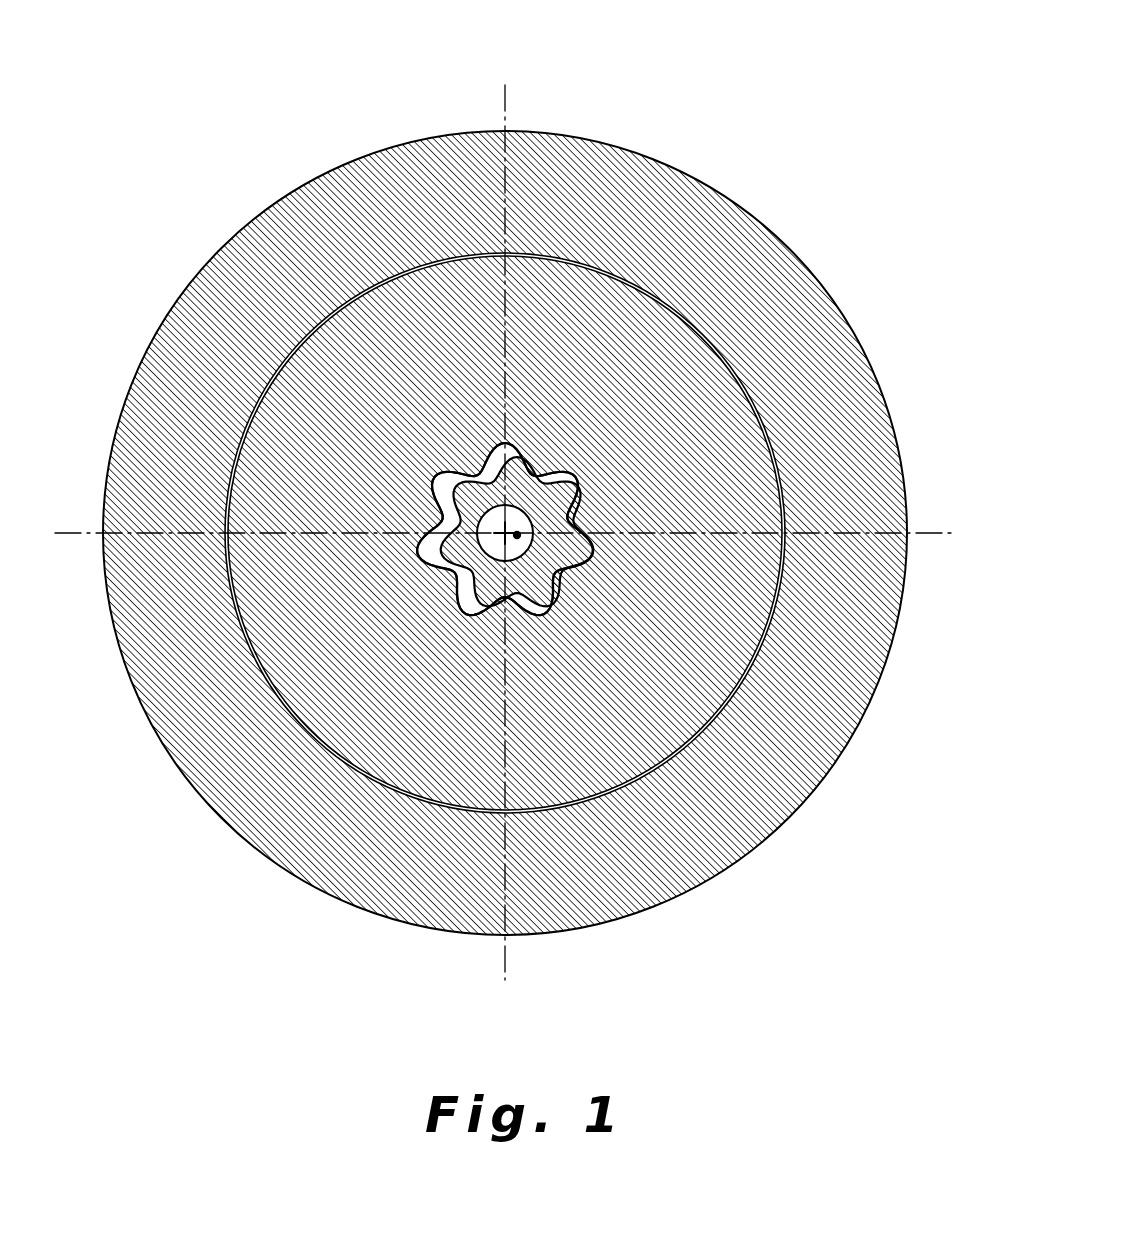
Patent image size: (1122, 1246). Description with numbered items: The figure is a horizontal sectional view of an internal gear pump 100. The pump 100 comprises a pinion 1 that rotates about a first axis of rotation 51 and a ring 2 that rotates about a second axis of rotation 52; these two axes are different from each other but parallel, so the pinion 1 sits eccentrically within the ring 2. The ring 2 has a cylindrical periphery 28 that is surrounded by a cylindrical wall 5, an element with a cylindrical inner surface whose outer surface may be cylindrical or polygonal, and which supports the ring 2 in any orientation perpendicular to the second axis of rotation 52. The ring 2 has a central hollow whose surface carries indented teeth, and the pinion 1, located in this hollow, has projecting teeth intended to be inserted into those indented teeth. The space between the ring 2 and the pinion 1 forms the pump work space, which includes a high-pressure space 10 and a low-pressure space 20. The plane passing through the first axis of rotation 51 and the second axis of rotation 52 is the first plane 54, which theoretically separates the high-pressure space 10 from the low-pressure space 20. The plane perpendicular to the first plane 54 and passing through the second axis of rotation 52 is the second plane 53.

The internal gear pump 100 is at (743, 123).
The pinion 1 is at (550, 498).
The ring 2 is at (675, 655).
The cylindrical wall 5 is at (700, 795).
The high-pressure space 10 is at (443, 485).
The low-pressure space 20 is at (538, 612).
The cylindrical periphery 28 is at (727, 357).
The first axis of rotation 51 is at (517, 535).
The second axis of rotation 52 is at (505, 535).
The second plane 53 is at (513, 975).
The first plane 54 is at (913, 535).